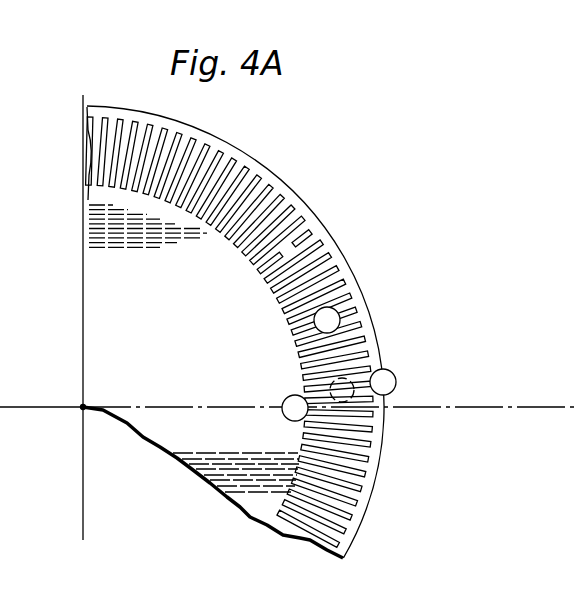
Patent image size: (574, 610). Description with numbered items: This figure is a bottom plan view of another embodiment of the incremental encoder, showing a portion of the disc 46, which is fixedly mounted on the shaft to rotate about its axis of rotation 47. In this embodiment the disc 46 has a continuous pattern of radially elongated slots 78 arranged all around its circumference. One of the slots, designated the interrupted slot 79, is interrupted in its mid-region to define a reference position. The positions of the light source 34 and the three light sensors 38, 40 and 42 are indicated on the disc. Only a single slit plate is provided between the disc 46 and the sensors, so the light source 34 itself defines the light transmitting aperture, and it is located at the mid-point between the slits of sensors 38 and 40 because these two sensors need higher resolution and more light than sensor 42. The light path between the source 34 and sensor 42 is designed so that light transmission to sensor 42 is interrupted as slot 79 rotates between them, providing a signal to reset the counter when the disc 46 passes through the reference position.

The radially elongated slots 78 is at (290, 212).
The interrupted slot 79 is at (317, 240).
The light sensor 42 is at (340, 306).
The disc 46 is at (372, 348).
The light source 34 is at (352, 382).
The light sensor 40 is at (396, 382).
The light sensor 38 is at (286, 420).
The axis of rotation 47 is at (84, 406).